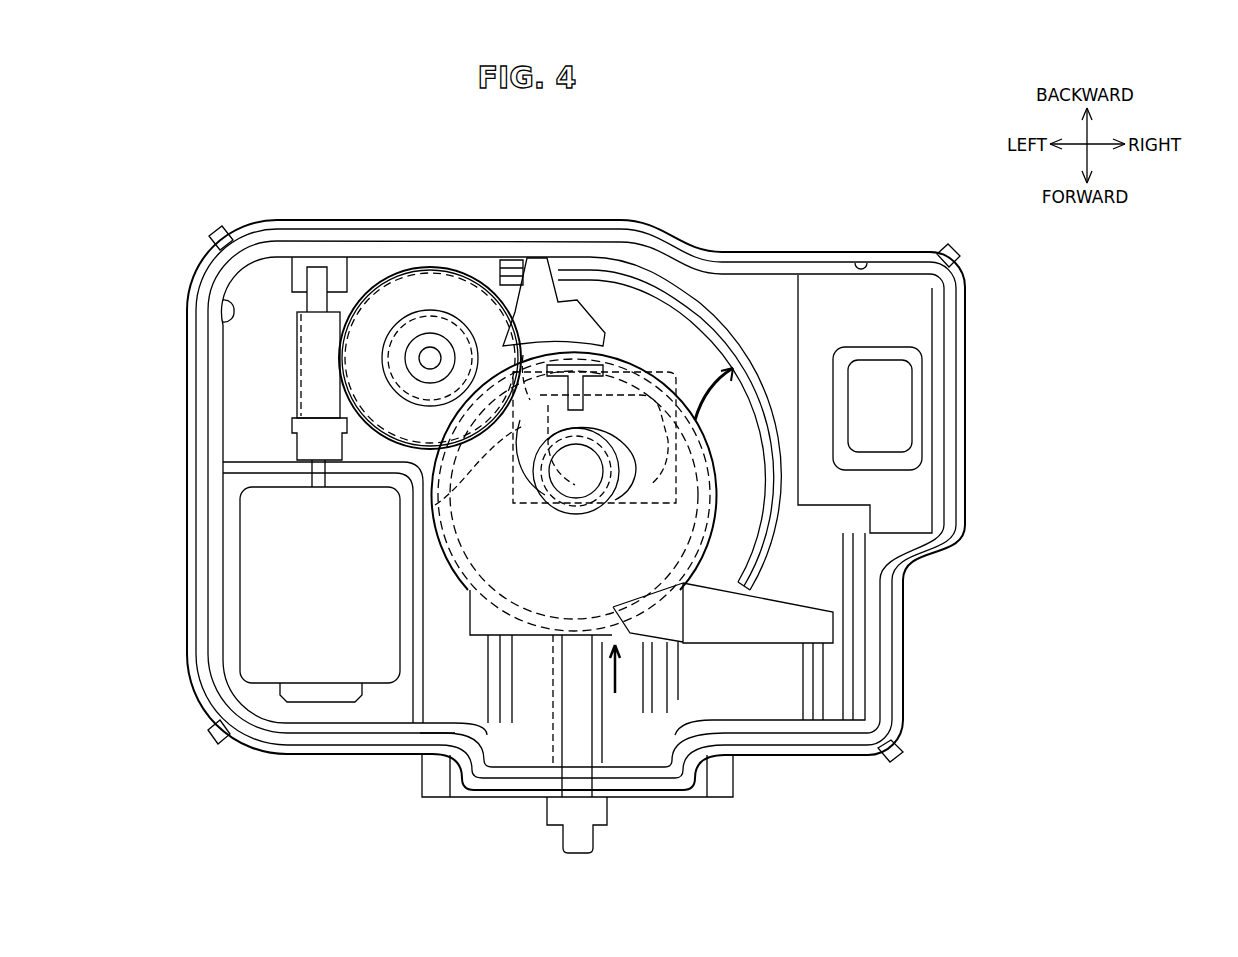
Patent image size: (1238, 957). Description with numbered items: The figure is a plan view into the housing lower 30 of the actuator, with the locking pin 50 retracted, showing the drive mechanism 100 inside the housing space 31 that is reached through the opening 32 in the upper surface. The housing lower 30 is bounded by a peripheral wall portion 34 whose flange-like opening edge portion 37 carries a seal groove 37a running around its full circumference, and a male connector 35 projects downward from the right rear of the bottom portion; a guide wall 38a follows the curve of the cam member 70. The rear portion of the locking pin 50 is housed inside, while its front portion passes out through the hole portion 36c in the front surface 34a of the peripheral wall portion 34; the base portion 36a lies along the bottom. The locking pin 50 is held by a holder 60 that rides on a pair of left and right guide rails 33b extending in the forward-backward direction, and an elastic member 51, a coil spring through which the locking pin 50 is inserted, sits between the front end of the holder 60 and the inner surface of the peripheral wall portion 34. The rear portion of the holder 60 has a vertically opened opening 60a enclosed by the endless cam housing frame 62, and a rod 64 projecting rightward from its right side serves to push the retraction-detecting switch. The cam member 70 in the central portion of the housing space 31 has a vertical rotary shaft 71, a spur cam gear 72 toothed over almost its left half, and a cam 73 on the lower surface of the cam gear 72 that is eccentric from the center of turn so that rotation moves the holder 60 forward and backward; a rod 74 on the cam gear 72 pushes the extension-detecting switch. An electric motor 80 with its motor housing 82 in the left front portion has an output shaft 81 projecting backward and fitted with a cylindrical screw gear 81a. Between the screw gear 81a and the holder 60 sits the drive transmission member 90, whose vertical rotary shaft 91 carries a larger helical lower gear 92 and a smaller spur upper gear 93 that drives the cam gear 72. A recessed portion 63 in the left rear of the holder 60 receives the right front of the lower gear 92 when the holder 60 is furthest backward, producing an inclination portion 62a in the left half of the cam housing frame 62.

The drive mechanism 100 is at (378, 150).
The housing lower 30 is at (776, 250).
The housing space 31 is at (474, 693).
The opening 32 is at (230, 301).
The guide rails 33b is at (493, 710).
The peripheral wall portion 34 is at (952, 343).
The front surface 34a is at (807, 757).
The male connector 35 is at (887, 470).
The base portion 36a is at (702, 800).
The hole portion 36c is at (580, 817).
The opening edge portion 37 is at (828, 253).
The seal groove 37a is at (865, 262).
The guide wall 38a is at (588, 258).
The locking pin 50 is at (587, 712).
The elastic member 51 is at (600, 750).
The holder 60 is at (542, 645).
The opening 60a is at (633, 497).
The cam housing frame 62 is at (625, 375).
The inclination portion 62a is at (523, 355).
The recessed portion 63 is at (435, 505).
The rod 64 is at (763, 637).
The cam member 70 is at (658, 362).
The rotary shaft 71 is at (572, 497).
The cam gear 72 is at (495, 370).
The cam 73 is at (633, 460).
The rod 74 is at (538, 262).
The electric motor 80 is at (237, 548).
The output shaft 81 is at (313, 477).
The screw gear 81a is at (310, 363).
The motor housing 82 is at (270, 593).
The drive transmission member 90 is at (363, 275).
The rotary shaft 91 is at (437, 347).
The lower gear 92 is at (390, 287).
The upper gear 93 is at (410, 333).